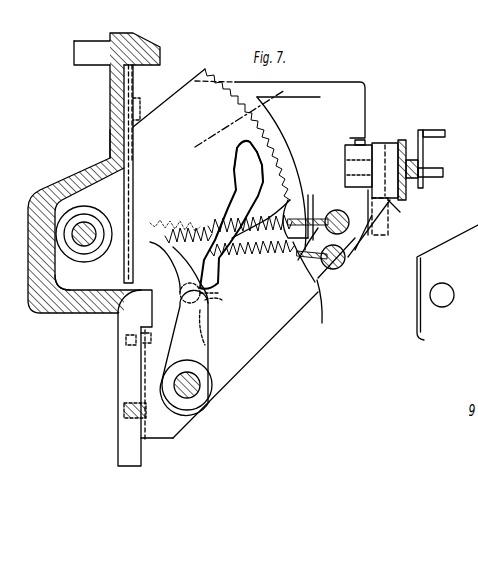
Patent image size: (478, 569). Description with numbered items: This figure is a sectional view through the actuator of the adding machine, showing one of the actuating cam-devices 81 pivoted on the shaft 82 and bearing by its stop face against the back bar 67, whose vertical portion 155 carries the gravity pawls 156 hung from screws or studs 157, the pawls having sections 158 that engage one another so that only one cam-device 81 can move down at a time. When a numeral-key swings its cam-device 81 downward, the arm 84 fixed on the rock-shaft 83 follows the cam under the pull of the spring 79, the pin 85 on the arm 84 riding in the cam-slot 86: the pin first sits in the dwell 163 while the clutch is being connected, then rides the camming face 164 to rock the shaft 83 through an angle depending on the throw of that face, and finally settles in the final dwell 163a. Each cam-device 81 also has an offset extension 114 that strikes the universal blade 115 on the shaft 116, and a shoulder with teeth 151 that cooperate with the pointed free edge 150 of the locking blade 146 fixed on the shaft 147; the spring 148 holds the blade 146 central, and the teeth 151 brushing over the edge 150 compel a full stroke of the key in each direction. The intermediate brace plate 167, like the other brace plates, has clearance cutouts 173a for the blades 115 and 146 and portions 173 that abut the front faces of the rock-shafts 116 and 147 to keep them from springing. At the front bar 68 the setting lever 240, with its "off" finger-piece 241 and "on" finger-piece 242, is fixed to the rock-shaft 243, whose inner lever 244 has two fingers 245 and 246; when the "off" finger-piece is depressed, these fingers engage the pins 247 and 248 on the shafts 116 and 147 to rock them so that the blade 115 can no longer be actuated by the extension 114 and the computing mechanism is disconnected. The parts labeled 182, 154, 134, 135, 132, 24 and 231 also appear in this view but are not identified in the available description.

The mounting bracket cap 182 is at (128, 33).
The back bar 67 is at (50, 183).
The shaft 82 is at (85, 242).
The sections 158 is at (122, 270).
The vertical portion 155 is at (110, 144).
The actuating cam-device 81 is at (140, 174).
The gravity pawls 156 is at (134, 211).
The screws or studs 157 is at (134, 143).
The lower channel member 154 is at (42, 313).
The third intermediate plate 167 is at (252, 362).
The arm 84 is at (179, 322).
The rock-shaft 83 is at (210, 398).
The spring 79 is at (165, 285).
The pin 85 is at (218, 296).
The cam-slot 86 is at (231, 296).
The spring 148 is at (181, 217).
The spring 134 is at (246, 268).
The dwell 163 is at (220, 270).
The final dwell 163a is at (234, 172).
The camming face 164 is at (260, 182).
The toothed sector 135 is at (287, 140).
The offset extension 114 is at (290, 160).
The first tooth 132 is at (210, 76).
The teeth 151 is at (237, 82).
The direction of movement 24 is at (283, 87).
The longitudinal free edge 150 is at (285, 212).
The locking blade 146 is at (306, 217).
The shaft 147 is at (330, 207).
The finger 245 is at (350, 222).
The shaft 116 is at (340, 268).
The universal plate or blade 115 is at (318, 284).
The clearance cutouts 173a is at (308, 306).
The portions 173 is at (362, 240).
The pin 247 is at (362, 252).
The rock-shaft 243 is at (345, 162).
The lever 244 is at (375, 155).
The finger 246 is at (388, 166).
The setting lever 240 is at (424, 148).
The "off" finger-piece 241 is at (436, 130).
The "on" finger-piece 242 is at (437, 178).
The front bar 68 is at (398, 198).
The pin 248 is at (400, 212).
The side plate 231 is at (447, 282).